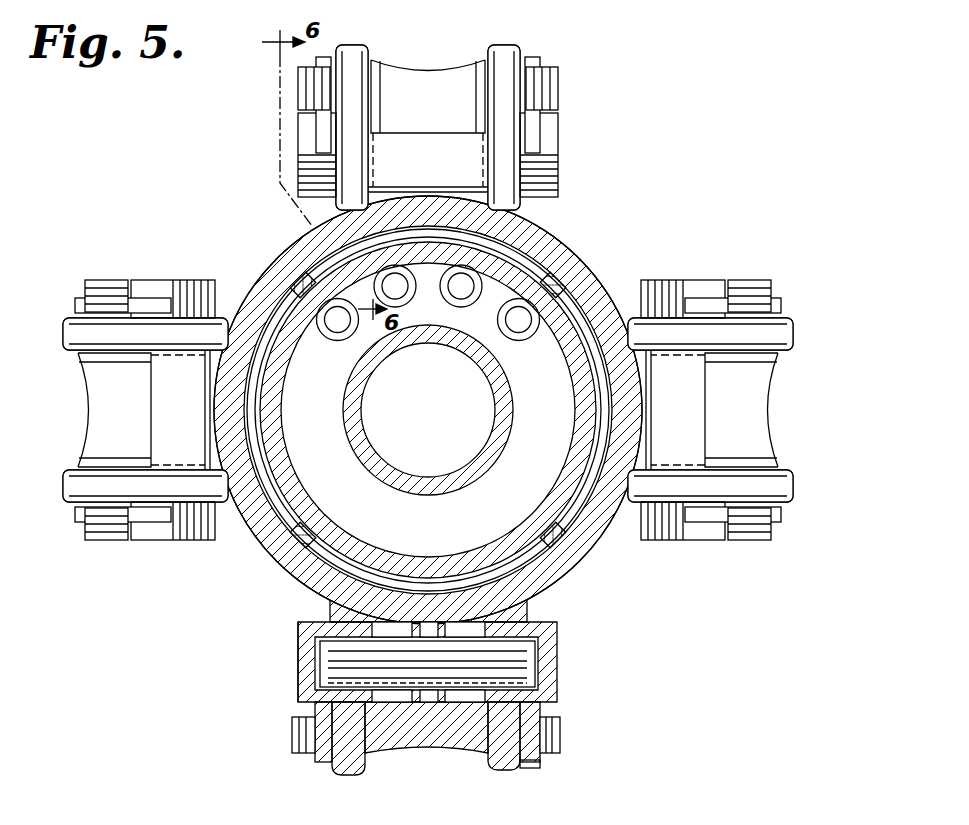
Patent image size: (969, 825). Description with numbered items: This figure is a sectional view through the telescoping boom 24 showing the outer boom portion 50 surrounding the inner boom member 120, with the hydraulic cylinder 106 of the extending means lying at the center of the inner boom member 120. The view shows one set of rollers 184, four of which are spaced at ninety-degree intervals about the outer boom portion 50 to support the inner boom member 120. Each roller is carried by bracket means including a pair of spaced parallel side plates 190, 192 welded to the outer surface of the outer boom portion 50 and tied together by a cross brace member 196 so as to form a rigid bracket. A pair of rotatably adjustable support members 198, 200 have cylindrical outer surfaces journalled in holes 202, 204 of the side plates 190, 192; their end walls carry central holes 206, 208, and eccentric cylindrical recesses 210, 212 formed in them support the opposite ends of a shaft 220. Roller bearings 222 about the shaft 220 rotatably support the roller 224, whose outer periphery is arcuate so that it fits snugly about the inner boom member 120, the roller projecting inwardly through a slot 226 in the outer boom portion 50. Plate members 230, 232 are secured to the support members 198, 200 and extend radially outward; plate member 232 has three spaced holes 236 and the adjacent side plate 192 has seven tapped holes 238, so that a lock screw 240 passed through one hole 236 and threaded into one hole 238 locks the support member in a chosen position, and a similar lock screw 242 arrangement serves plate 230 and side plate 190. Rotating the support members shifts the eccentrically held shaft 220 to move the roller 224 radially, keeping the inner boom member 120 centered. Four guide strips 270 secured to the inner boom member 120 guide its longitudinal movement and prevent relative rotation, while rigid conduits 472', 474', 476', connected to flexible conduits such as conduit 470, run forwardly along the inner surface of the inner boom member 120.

The roller head assembly 24 is at (369, 410).
The outer boom portion 50 is at (585, 262).
The hydraulic cylinder 106 is at (375, 478).
The inner boom member 120 is at (585, 395).
The rollers 184 is at (598, 130).
The side plate 190 is at (508, 50).
The side plate 192 is at (362, 54).
The cross brace member 196 is at (428, 130).
The rotatably adjustable support member 198 is at (558, 166).
The rotatably adjustable support member 200 is at (300, 162).
The hole 202 is at (340, 688).
The hole 204 is at (520, 688).
The central hole 206 is at (297, 678).
The central hole 208 is at (558, 668).
The eccentric cylindrical recess 210 is at (385, 638).
The eccentric cylindrical recess 212 is at (470, 638).
The shaft 220 is at (470, 688).
The roller bearings 222 is at (430, 638).
The roller 224 is at (446, 66).
The slot 226 is at (522, 218).
The plate member 230 is at (546, 62).
The plate member 232 is at (325, 60).
The spaced holes 236 is at (542, 764).
The tapped holes 238 is at (480, 760).
The lock screw 240 is at (298, 88).
The nut 242 is at (563, 88).
The guide strips 270 is at (300, 276).
The flexible conduit 470 is at (336, 341).
The rigid conduit 472' is at (413, 283).
The rigid conduit 474' is at (469, 296).
The rigid conduit 476' is at (524, 336).